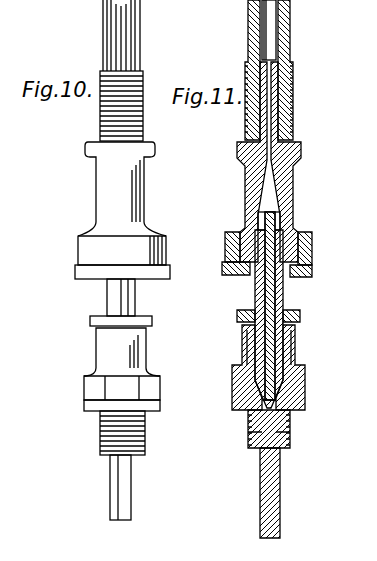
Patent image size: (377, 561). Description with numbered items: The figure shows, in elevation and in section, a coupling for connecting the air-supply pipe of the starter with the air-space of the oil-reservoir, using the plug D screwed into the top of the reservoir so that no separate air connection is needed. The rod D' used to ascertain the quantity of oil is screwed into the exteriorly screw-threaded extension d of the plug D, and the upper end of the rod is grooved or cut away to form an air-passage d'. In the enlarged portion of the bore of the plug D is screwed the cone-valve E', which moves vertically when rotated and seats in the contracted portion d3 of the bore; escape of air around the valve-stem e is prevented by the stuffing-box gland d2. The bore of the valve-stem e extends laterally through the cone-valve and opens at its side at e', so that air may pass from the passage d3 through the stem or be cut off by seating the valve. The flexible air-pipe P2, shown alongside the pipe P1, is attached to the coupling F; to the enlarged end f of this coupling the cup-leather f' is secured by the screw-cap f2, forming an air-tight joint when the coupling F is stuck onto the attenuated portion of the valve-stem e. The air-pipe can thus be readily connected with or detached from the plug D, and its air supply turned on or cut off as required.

In FIG. 11, the pipe P1 is at (248, 30).
In FIG. 10, the flexible air-pipe P2 is at (136, 40).
In FIG. 10, the coupling F is at (122, 210).
In FIG. 11, the coupling F is at (244, 180).
In FIG. 11, the enlarged end of coupling f is at (277, 231).
In FIG. 11, the cup-leather f' is at (310, 282).
In FIG. 11, the screw-cap f2 is at (224, 270).
In FIG. 10, the valve-stem e is at (141, 297).
In FIG. 11, the valve-stem e is at (254, 319).
In FIG. 10, the side opening of valve-stem bore e' is at (121, 297).
In FIG. 11, the side opening of valve-stem bore e' is at (241, 321).
In FIG. 11, the cone-valve E' is at (288, 351).
In FIG. 10, the exteriorly screw-threaded extension d is at (103, 433).
In FIG. 11, the exteriorly screw-threaded extension d is at (283, 431).
In FIG. 11, the air-passage d' is at (247, 446).
In FIG. 10, the stuffing-box gland d2 is at (95, 318).
In FIG. 11, the stuffing-box gland d2 is at (240, 318).
In FIG. 11, the contracted portion of the bore d3 is at (292, 410).
In FIG. 10, the plug D is at (122, 369).
In FIG. 11, the plug D is at (255, 367).
In FIG. 10, the rod D' is at (103, 487).
In FIG. 11, the rod D' is at (254, 493).